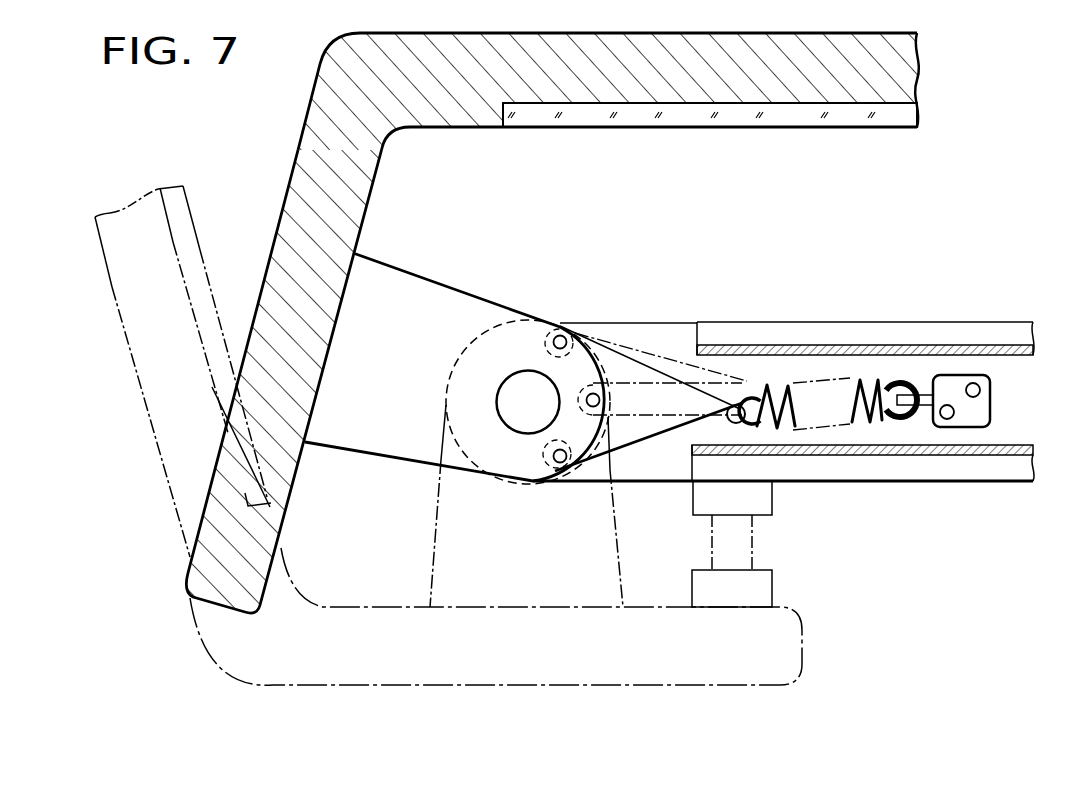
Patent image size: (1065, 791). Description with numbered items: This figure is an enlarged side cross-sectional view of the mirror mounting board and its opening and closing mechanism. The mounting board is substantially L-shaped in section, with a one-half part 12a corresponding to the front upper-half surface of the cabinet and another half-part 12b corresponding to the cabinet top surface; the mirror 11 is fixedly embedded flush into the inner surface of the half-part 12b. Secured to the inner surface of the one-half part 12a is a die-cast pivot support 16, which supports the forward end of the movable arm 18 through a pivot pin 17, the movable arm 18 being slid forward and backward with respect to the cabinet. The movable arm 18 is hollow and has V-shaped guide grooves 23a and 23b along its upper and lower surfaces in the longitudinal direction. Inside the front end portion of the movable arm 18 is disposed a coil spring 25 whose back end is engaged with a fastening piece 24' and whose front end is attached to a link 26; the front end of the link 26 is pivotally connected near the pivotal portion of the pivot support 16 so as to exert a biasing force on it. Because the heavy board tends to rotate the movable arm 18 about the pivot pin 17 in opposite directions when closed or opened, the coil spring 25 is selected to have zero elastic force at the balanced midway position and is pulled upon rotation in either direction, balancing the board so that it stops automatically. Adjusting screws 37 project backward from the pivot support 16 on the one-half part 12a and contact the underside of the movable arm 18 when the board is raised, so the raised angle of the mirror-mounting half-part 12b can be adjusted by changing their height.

The mirror 11 is at (693, 120).
The one-half part of the mounting board 12a is at (369, 203).
The other half-part of the mounting board 12b is at (463, 130).
The pivot support 16 is at (476, 304).
The pivot pin 17 is at (518, 417).
The movable arm 18 is at (900, 481).
The V-shaped guide groove 23a is at (927, 345).
The V-shaped guide groove 23b is at (978, 458).
The fastening piece 24' is at (957, 344).
The coil spring 25 is at (870, 378).
The link 26 is at (658, 440).
The adjusting screw 37 is at (765, 505).